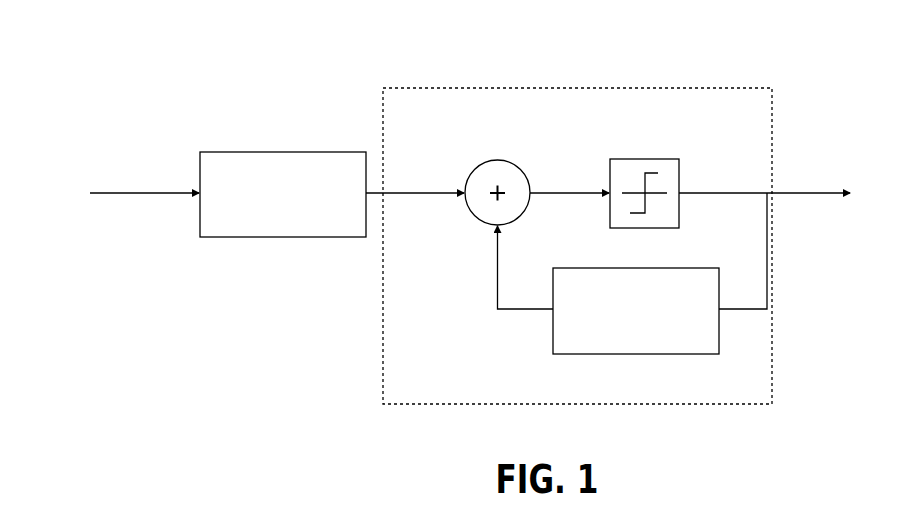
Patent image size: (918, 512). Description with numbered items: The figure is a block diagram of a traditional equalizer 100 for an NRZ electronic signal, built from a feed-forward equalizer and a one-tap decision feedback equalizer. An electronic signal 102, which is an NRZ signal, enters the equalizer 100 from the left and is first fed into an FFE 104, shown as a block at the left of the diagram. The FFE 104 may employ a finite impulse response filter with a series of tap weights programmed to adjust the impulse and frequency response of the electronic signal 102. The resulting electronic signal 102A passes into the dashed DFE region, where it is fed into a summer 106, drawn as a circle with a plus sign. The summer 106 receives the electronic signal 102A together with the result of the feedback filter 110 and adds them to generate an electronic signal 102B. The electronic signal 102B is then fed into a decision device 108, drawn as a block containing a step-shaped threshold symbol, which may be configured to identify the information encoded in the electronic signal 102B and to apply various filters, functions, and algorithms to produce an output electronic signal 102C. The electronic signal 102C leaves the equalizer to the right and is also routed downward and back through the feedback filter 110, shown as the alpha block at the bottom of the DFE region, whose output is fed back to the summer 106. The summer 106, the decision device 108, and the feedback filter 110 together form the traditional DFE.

The equalizer 100 is at (140, 139).
The electronic signal 102 is at (110, 194).
The FFE 104 is at (283, 194).
The electronic signal 102A is at (415, 178).
The summer 106 is at (524, 163).
The electronic signal 102B is at (569, 182).
The decision device 108 is at (657, 147).
The electronic signal 102C is at (764, 182).
The feedback filter 110 is at (698, 257).